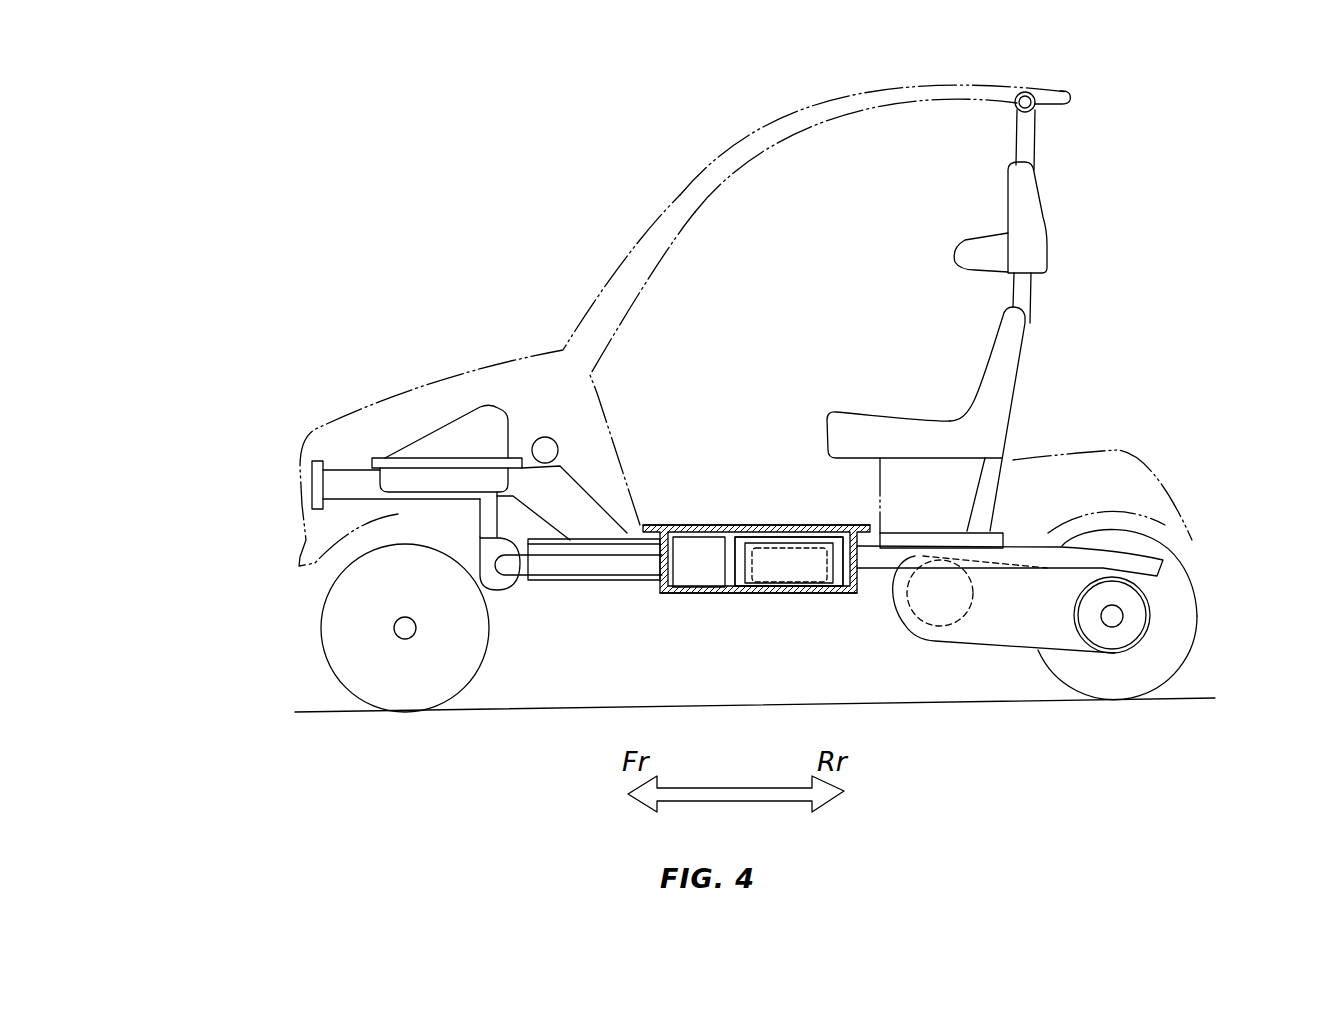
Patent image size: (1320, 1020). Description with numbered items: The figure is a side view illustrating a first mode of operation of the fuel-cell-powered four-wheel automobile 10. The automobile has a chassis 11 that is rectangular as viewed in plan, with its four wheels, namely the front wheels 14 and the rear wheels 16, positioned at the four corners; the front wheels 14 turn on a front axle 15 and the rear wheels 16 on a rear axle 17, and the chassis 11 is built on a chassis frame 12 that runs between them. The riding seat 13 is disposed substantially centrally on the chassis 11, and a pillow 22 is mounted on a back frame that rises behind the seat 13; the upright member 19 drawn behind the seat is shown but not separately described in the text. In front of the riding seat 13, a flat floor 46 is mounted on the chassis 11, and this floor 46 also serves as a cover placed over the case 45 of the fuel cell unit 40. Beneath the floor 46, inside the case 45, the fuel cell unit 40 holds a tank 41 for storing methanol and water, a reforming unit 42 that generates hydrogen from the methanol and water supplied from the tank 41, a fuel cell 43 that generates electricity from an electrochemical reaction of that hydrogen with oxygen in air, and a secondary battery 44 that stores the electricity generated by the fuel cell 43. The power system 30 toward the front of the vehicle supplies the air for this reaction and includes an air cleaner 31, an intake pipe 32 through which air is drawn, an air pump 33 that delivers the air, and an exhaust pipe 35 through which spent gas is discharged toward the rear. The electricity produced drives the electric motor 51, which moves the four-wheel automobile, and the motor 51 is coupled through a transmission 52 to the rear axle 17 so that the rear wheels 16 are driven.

The fuel-cell-powered four-wheel automobile 10 is at (357, 128).
The chassis 11 is at (537, 387).
The chassis frame 12 is at (602, 582).
The riding seat 13 is at (917, 418).
The front wheels 14 is at (323, 613).
The front axle 15 is at (402, 640).
The rear wheels 16 is at (1190, 632).
The rear axle 17 is at (1113, 627).
The seat post 19 is at (1033, 297).
The pillow 22 is at (980, 233).
The power system 30 is at (524, 452).
The air cleaner 31 is at (433, 432).
The intake pipe 32 is at (552, 567).
The air pump 33 is at (513, 540).
The exhaust pipe 35 is at (1105, 515).
The fuel cell unit 40 is at (748, 545).
The tank 41 is at (757, 537).
The reforming unit 42 is at (787, 547).
The fuel cell 43 is at (745, 560).
The secondary battery 44 is at (673, 573).
The case 45 is at (790, 597).
The floor 46 is at (727, 525).
The electric motor 51 is at (932, 637).
The transmission 52 is at (1010, 650).